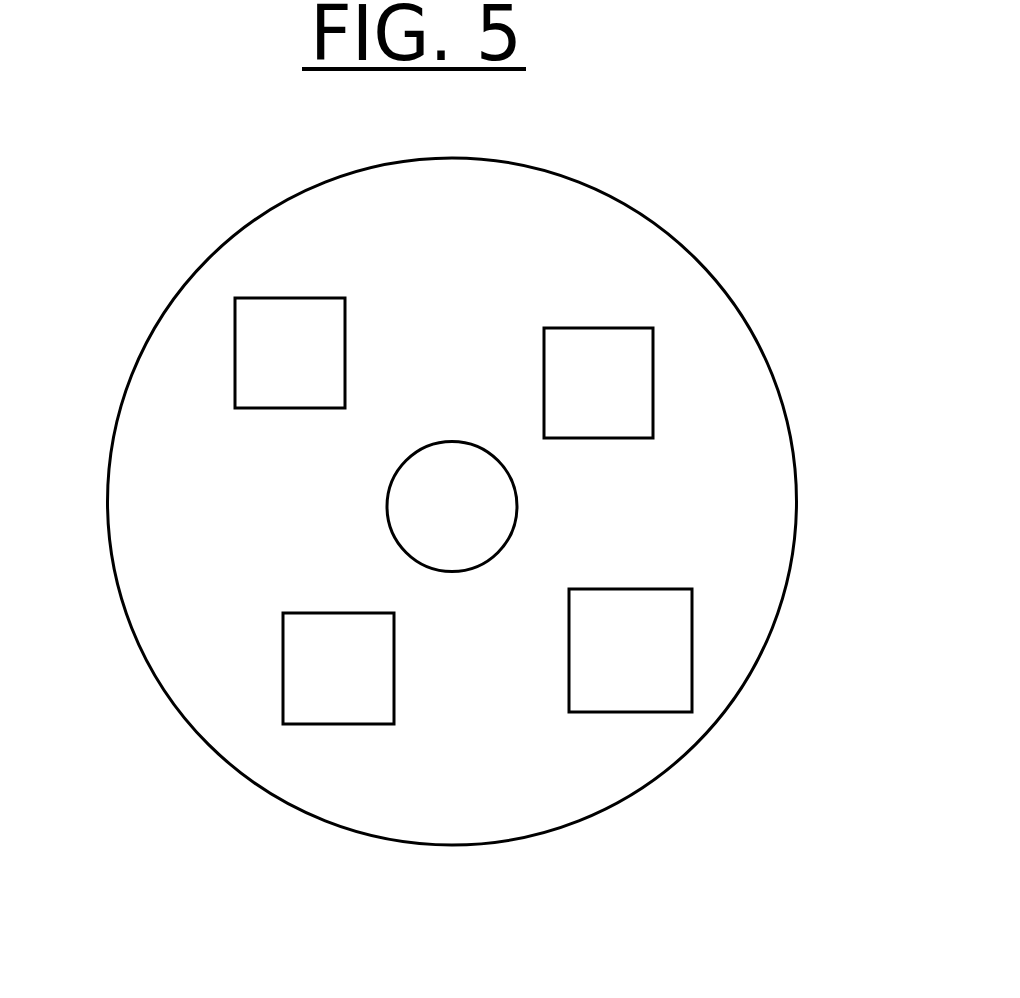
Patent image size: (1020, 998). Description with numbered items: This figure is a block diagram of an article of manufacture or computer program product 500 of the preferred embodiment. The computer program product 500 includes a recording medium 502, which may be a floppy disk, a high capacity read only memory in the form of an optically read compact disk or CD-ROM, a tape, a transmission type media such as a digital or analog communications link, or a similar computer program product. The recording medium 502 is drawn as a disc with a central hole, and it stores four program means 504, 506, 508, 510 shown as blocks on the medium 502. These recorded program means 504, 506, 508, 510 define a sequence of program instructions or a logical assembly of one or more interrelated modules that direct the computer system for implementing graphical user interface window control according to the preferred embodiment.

The computer program product 500 is at (752, 270).
The recording medium 502 is at (162, 294).
The program means 504 is at (338, 668).
The program means 506 is at (630, 650).
The program means 508 is at (598, 383).
The program means 510 is at (290, 353).